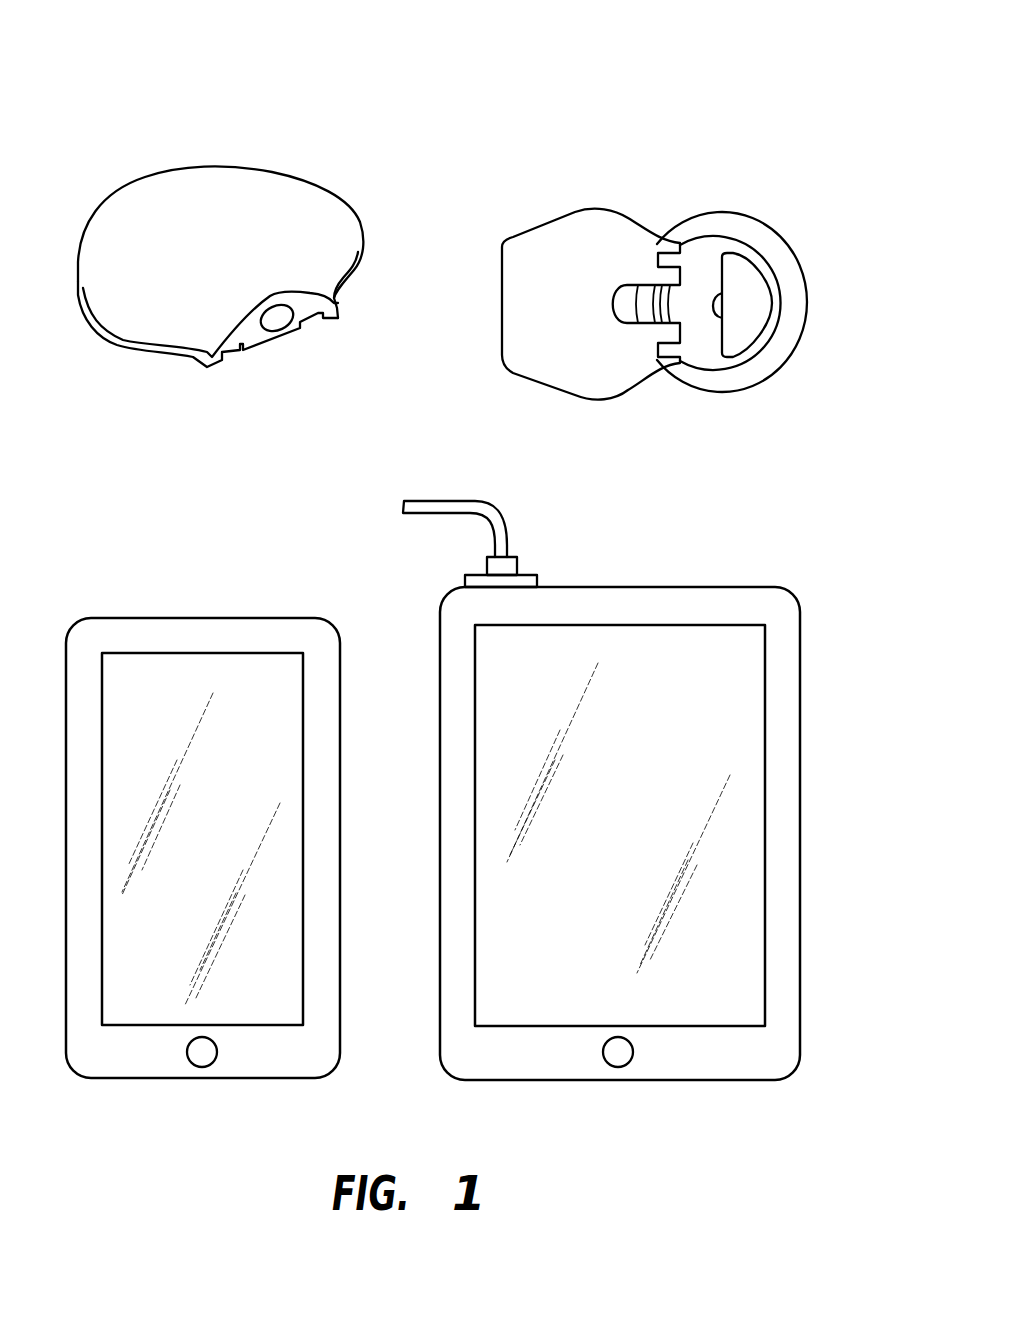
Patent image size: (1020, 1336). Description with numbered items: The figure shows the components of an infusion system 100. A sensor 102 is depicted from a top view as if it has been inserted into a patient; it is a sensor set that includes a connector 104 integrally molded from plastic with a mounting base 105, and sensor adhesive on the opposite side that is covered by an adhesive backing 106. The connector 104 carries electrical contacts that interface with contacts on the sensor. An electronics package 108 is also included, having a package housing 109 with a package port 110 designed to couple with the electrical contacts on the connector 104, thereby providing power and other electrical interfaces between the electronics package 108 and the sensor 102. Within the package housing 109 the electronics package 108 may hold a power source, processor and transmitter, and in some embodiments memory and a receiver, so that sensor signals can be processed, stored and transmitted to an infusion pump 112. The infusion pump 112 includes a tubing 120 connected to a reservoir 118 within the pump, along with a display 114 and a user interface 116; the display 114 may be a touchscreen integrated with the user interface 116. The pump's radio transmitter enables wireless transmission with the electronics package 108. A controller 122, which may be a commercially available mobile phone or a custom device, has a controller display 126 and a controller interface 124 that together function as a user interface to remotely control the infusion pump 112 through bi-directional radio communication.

The infusion system 100 is at (116, 94).
The sensor 102 is at (593, 227).
The connector 104 is at (677, 303).
The mounting base 105 is at (703, 252).
The adhesive backing 106 is at (747, 380).
The electronics package 108 is at (118, 352).
The package housing 109 is at (333, 227).
The package port 110 is at (277, 318).
The infusion pump 112 is at (800, 953).
The display 114 is at (752, 737).
The user interface 116 is at (619, 1067).
The reservoir 118 is at (540, 580).
The tubing 120 is at (463, 493).
The controller 122 is at (117, 617).
The controller interface 124 is at (202, 1067).
The controller display 126 is at (227, 660).